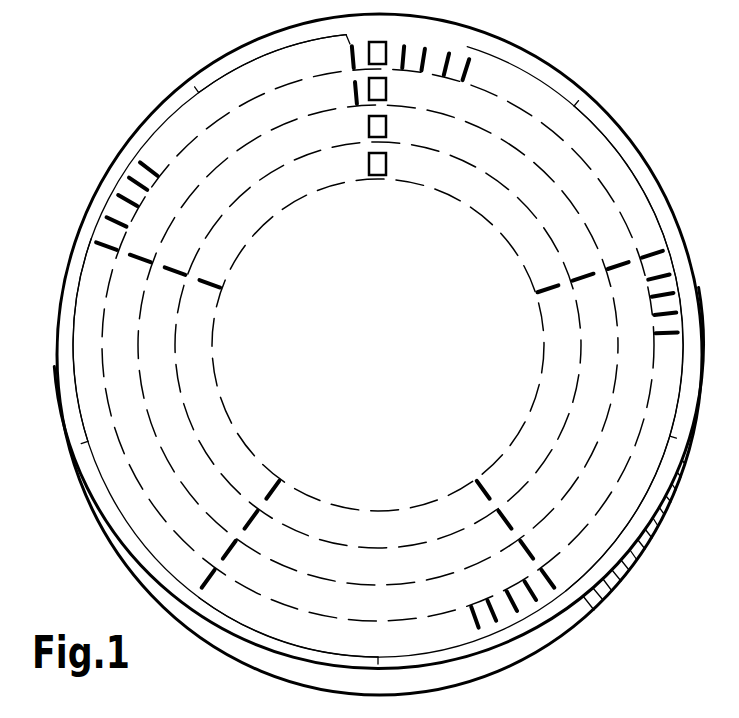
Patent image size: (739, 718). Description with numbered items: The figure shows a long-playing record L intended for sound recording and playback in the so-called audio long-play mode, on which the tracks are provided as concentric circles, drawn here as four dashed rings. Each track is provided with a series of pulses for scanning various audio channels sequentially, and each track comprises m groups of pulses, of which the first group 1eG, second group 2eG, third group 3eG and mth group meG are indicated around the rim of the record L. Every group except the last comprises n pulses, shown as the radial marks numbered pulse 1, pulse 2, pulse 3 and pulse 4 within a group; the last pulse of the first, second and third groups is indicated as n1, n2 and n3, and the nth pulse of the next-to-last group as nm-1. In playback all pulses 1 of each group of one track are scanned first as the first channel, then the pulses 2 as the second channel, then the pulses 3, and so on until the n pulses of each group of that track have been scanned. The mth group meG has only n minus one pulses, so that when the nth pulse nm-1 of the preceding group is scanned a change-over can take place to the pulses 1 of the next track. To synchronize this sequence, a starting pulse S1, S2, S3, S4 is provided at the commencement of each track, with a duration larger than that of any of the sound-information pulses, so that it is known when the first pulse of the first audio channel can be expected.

The long-playing record L is at (620, 568).
The starting pulse S1 is at (386, 53).
The starting pulse S2 is at (386, 90).
The starting pulse S3 is at (386, 128).
The starting pulse S4 is at (386, 166).
The nth pulse of first group n1 is at (664, 252).
The nth pulse of second group n2 is at (554, 590).
The nth pulse of third group n3 is at (229, 551).
The nth pulse of (m-1)th group nm-1 is at (97, 247).
The pulse 1 is at (404, 46).
The pulse 2 is at (425, 49).
The pulse 3 is at (449, 54).
The pulse 4 is at (469, 59).
The first group of pulses 1eG is at (578, 104).
The second group of pulses 2eG is at (684, 460).
The third group of pulses 3eG is at (391, 665).
The mth group of pulses meG is at (196, 88).